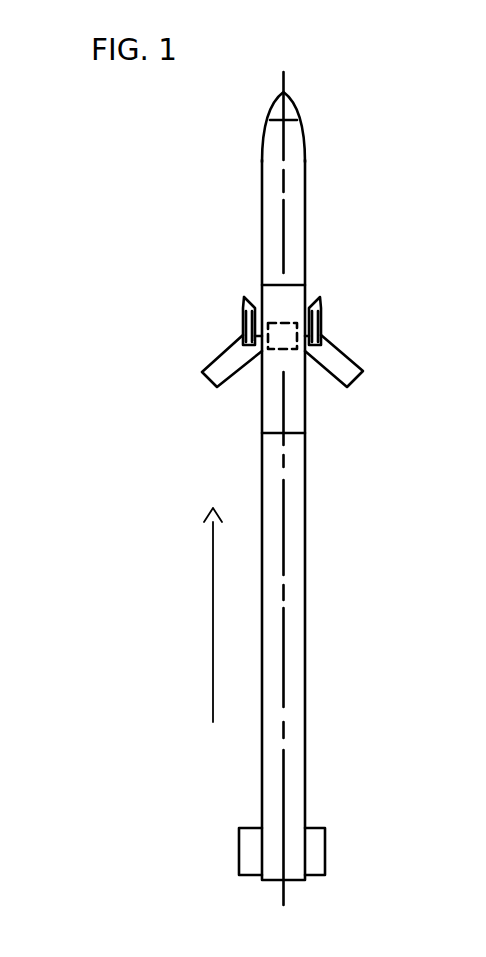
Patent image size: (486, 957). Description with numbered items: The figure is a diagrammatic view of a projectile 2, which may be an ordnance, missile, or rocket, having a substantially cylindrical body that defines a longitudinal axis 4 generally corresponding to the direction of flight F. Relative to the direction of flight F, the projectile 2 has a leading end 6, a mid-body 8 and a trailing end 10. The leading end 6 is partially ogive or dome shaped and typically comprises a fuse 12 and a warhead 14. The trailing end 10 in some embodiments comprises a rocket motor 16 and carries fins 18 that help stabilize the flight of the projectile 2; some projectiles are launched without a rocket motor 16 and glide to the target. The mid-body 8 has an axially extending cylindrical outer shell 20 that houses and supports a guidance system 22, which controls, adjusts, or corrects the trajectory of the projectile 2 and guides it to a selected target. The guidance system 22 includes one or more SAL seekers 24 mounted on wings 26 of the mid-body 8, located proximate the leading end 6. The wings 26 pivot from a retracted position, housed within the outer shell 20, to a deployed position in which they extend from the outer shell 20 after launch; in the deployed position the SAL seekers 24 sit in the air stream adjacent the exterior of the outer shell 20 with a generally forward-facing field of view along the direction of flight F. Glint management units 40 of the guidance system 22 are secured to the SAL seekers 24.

The projectile 2 is at (386, 238).
The longitudinal axis 4 is at (278, 797).
The leading end 6 is at (236, 183).
The mid-body 8 is at (190, 330).
The trailing end 10 is at (325, 615).
The fuse 12 is at (290, 98).
The warhead 14 is at (297, 197).
The rocket motor 16 is at (293, 718).
The fins 18 is at (313, 845).
The outer shell 20 is at (300, 408).
The guidance system 22 is at (365, 335).
The SAL seeker 24 is at (240, 325).
The wings 26 is at (347, 367).
The glint management unit 40 is at (323, 297).
The direction of flight F is at (213, 634).